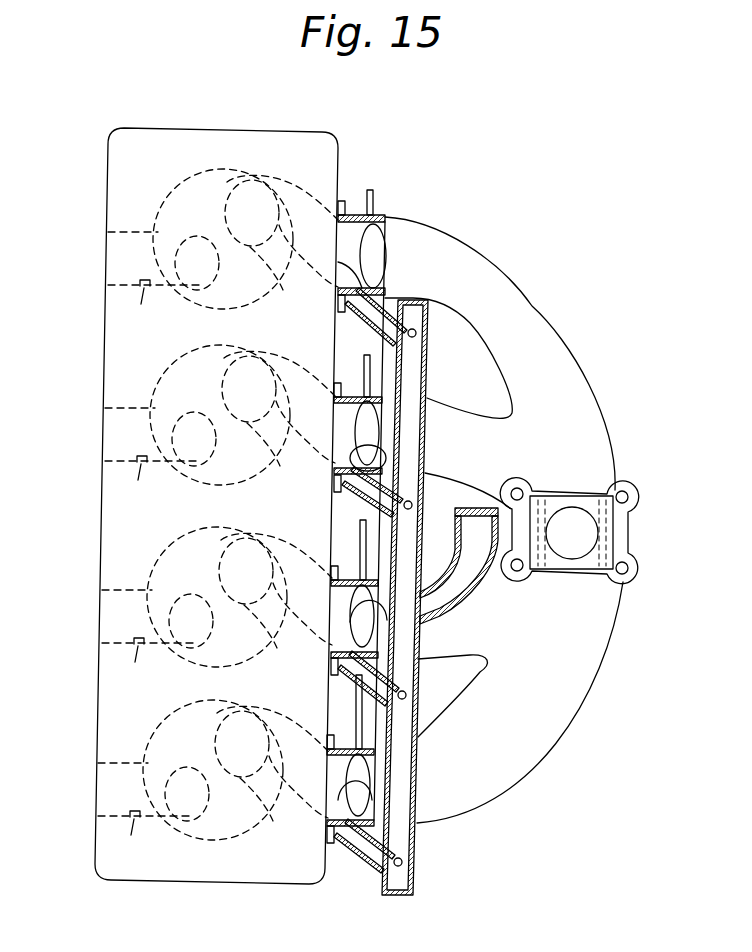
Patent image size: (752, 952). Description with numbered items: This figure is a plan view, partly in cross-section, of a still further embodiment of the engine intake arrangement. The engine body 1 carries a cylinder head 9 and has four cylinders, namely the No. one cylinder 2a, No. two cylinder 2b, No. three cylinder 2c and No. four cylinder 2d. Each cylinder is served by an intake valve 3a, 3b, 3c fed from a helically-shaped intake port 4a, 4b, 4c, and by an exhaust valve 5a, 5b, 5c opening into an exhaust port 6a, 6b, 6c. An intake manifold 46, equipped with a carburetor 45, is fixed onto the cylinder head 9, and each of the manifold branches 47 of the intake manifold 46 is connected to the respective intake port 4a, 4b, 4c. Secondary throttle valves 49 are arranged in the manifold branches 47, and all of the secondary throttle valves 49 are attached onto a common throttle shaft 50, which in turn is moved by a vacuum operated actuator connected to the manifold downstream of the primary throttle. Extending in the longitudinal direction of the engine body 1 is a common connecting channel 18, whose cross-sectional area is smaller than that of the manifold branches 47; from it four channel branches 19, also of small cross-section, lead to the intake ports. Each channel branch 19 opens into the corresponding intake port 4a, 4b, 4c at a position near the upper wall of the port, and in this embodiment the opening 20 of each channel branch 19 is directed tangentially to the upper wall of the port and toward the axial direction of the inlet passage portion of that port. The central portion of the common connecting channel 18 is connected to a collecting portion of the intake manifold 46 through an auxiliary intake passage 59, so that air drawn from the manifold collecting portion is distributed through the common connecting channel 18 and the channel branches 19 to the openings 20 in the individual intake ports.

The engine body 1 is at (221, 492).
The cylinder head 9 is at (340, 150).
The No. 1 cylinder 2a is at (181, 239).
The No. 2 cylinder 2b is at (176, 415).
The No. 3 cylinder 2c is at (172, 597).
The No. 4 cylinder 2d is at (167, 770).
The intake valve 3a is at (274, 282).
The intake valve 3b is at (272, 459).
The intake valve 3c is at (266, 726).
The helically-shaped intake port 4a is at (281, 221).
The helically-shaped intake port 4b is at (278, 398).
The helically-shaped intake port 4c is at (273, 663).
The exhaust valve 5a is at (195, 284).
The exhaust valve 5b is at (194, 461).
The exhaust valve 5c is at (185, 727).
The exhaust port 6a is at (140, 307).
The exhaust port 6b is at (139, 479).
The exhaust port 6c is at (133, 748).
The common connecting channel 18 is at (404, 848).
The channel branch 19 is at (362, 302).
The opening of channel branch 20 is at (346, 281).
The carburetor 45 is at (605, 485).
The intake manifold 46 is at (601, 428).
The manifold branch 47 is at (436, 229).
The secondary throttle valve 49 is at (378, 258).
The common throttle shaft 50 is at (400, 368).
The auxiliary intake passage 59 is at (450, 582).